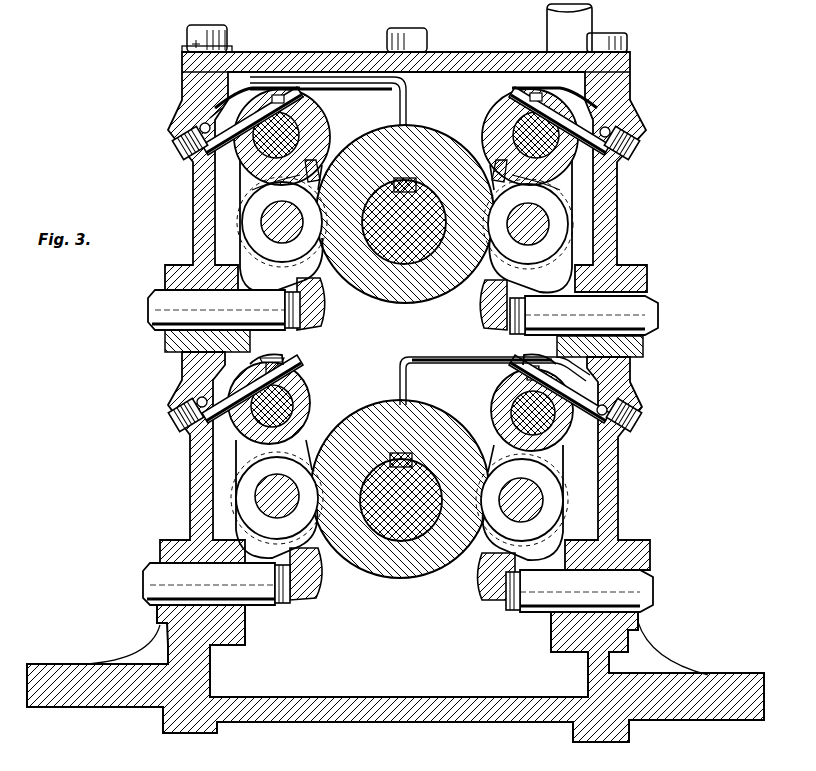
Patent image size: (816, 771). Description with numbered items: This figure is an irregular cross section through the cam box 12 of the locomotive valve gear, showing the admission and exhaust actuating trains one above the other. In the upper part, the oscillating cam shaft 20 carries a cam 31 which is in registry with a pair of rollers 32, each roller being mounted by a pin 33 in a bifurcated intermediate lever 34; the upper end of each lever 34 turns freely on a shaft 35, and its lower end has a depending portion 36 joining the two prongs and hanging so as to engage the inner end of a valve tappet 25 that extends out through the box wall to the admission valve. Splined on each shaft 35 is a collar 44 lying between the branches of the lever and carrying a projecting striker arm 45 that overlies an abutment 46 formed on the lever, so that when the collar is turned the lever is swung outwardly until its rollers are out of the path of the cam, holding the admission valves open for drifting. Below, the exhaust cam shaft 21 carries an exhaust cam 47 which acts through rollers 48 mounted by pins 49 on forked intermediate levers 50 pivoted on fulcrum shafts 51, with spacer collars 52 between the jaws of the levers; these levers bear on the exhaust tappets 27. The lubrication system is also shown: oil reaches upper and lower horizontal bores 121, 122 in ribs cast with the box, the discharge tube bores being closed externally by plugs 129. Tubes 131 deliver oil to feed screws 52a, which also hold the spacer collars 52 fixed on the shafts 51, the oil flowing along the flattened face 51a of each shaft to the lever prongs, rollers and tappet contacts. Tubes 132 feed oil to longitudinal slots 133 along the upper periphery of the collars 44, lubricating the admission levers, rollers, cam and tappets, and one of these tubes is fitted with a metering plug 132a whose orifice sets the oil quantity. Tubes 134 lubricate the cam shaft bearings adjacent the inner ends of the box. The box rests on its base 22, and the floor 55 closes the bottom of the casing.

The cam box 12 is at (612, 249).
The oscillating cam shaft 20 is at (400, 258).
The exhaust cam shaft 21 is at (393, 528).
The base 22 is at (90, 708).
The valve tappet 25 is at (163, 298).
The tappet 27 is at (157, 573).
The cam 31 is at (425, 132).
The roller 32 is at (250, 222).
The pin 33 is at (265, 212).
The intermediate lever 34 is at (240, 192).
The shaft 35 is at (300, 130).
The depending portion 36 is at (322, 308).
The collar 44 is at (310, 127).
The striker arm 45 is at (330, 157).
The abutment 46 is at (305, 170).
The exhaust cam 47 is at (383, 402).
The roller 48 is at (248, 499).
The pin 49 is at (262, 484).
The intermediate lever 50 is at (238, 456).
The fulcrum shaft 51 is at (300, 401).
The flattened face 51a is at (296, 386).
The spacer collar 52 is at (300, 420).
The feed screw 52a is at (287, 374).
The floor 55 is at (420, 707).
The upper horizontal bore 121 is at (205, 122).
The lower horizontal bore 122 is at (207, 403).
The plug 129 is at (183, 145).
The tube 131 is at (266, 367).
The tube 132 is at (238, 95).
The metering plug 132a is at (212, 115).
The longitudinal slot 133 is at (528, 92).
The tube 134 is at (407, 90).